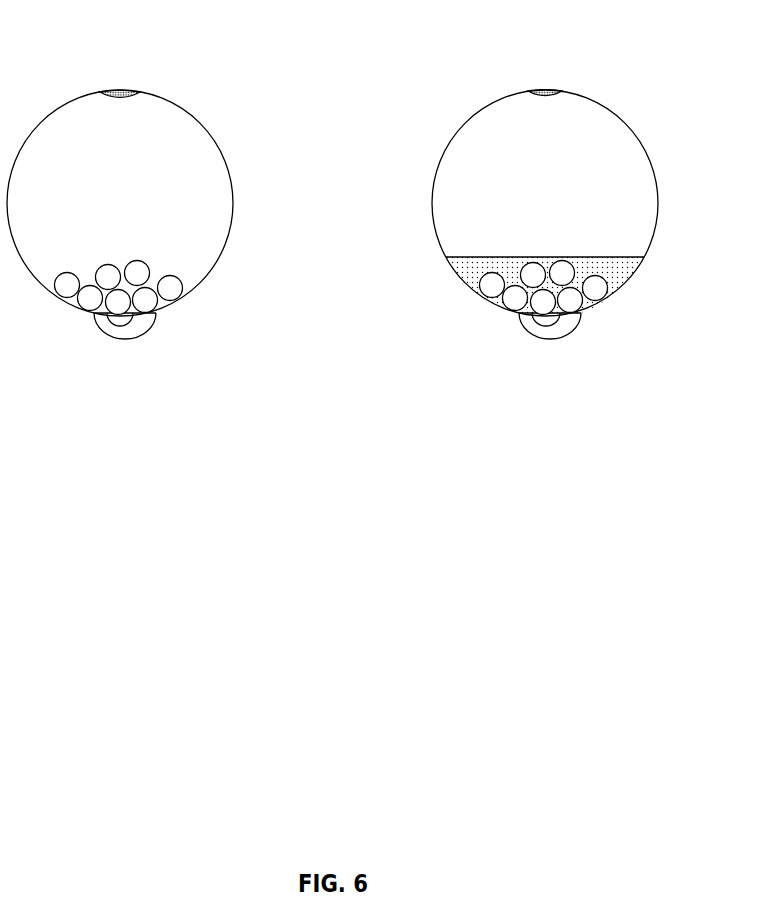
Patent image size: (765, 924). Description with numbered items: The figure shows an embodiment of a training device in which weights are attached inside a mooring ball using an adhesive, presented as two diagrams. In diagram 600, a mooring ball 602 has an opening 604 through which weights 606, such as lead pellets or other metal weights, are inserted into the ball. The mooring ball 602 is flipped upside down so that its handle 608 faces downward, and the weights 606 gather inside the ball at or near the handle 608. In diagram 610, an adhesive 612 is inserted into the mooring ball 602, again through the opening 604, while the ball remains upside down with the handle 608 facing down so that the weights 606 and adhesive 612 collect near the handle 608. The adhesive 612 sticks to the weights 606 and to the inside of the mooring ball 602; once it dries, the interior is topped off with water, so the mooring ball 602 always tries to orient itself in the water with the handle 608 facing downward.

The diagram 600 is at (332, 204).
The mooring ball 602 is at (233, 203).
The opening 604 is at (122, 91).
The weights 606 is at (140, 262).
The handle 608 is at (117, 340).
The diagram 610 is at (618, 50).
The adhesive 612 is at (612, 257).